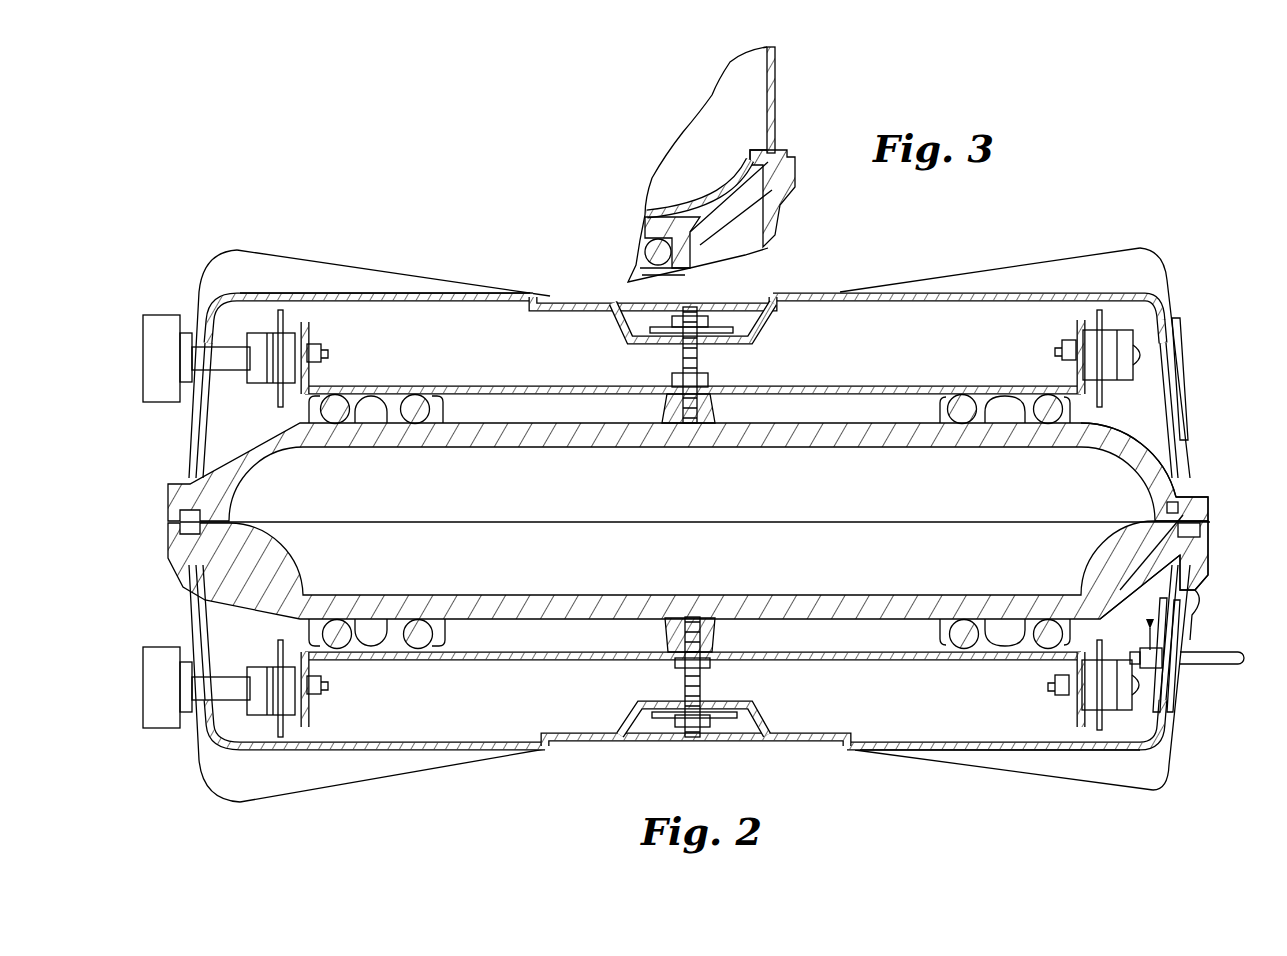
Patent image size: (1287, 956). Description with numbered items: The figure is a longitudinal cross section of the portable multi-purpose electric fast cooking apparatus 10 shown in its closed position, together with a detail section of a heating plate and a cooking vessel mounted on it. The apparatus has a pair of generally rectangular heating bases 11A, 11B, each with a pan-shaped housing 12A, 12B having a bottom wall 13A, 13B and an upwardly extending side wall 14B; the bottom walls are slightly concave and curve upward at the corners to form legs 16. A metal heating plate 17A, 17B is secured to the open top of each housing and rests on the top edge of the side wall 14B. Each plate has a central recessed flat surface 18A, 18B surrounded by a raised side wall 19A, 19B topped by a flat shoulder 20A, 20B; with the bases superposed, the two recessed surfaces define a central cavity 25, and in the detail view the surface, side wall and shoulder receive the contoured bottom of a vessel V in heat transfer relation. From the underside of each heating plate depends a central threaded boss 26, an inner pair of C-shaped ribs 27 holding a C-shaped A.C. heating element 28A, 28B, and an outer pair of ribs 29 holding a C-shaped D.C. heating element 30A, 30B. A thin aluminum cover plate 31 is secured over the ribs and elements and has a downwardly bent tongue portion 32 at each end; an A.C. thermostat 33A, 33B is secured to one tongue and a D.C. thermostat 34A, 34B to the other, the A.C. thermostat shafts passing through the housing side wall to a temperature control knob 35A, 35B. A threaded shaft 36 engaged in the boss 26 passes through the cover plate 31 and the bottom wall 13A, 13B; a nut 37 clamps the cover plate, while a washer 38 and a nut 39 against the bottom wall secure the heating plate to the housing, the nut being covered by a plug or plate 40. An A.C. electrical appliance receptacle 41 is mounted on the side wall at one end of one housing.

In FIG. 2, the portable multi-purpose electric fast cooking apparatus 10 is at (832, 270).
In FIG. 2, the heating base 11A is at (400, 270).
In FIG. 2, the heating base 11B is at (1020, 777).
In FIG. 2, the housing 12A is at (345, 293).
In FIG. 2, the housing 12B is at (975, 755).
In FIG. 2, the bottom wall 13A is at (460, 297).
In FIG. 2, the bottom wall 13B is at (910, 750).
In FIG. 2, the side wall 14B is at (1192, 578).
In FIG. 2, the legs 16 is at (237, 250).
In FIG. 2, the heating plate 17A is at (688, 472).
In FIG. 2, the central recessed flat surface 18A is at (575, 437).
In FIG. 2, the heating plate 17B is at (688, 567).
In FIG. 3, the heating plate 17B is at (695, 215).
In FIG. 2, the central recessed flat surface 18B is at (548, 594).
In FIG. 3, the central recessed flat surface 18B is at (682, 213).
In FIG. 2, the raised side wall 19A is at (1140, 478).
In FIG. 2, the raised side wall 19B is at (1140, 557).
In FIG. 3, the raised side wall 19B is at (753, 168).
In FIG. 2, the flat shoulder 20A is at (1150, 505).
In FIG. 2, the flat shoulder 20B is at (1148, 535).
In FIG. 3, the flat shoulder 20B is at (780, 157).
In FIG. 2, the central cavity 25 is at (722, 505).
In FIG. 2, the central threaded boss 26 is at (720, 408).
In FIG. 2, the inner pair of ribs 27 is at (420, 395).
In FIG. 2, the A.C. heating element 28A is at (418, 430).
In FIG. 2, the A.C. heating element 28B is at (420, 620).
In FIG. 2, the outer pair of ribs 29 is at (340, 395).
In FIG. 2, the D.C. heating element 30A is at (340, 430).
In FIG. 2, the D.C. heating element 30B is at (345, 650).
In FIG. 2, the cover plate 31 is at (855, 387).
In FIG. 2, the tongue portion 32 is at (308, 325).
In FIG. 2, the A.C. thermostat 33A is at (258, 345).
In FIG. 2, the A.C. thermostat 33B is at (262, 690).
In FIG. 2, the D.C. thermostat 34A is at (1115, 338).
In FIG. 2, the D.C. thermostat 34B is at (1095, 702).
In FIG. 2, the temperature control knob 35A is at (170, 320).
In FIG. 2, the temperature control knob 35B is at (172, 648).
In FIG. 2, the threaded shaft 36 is at (683, 357).
In FIG. 2, the nut 37 is at (708, 380).
In FIG. 2, the washer 38 is at (747, 330).
In FIG. 2, the nut 39 is at (707, 308).
In FIG. 2, the plug or plate 40 is at (595, 292).
In FIG. 2, the A.C. electrical appliance receptacle 41 is at (1208, 662).
In FIG. 3, the vehicle body panel V is at (783, 70).